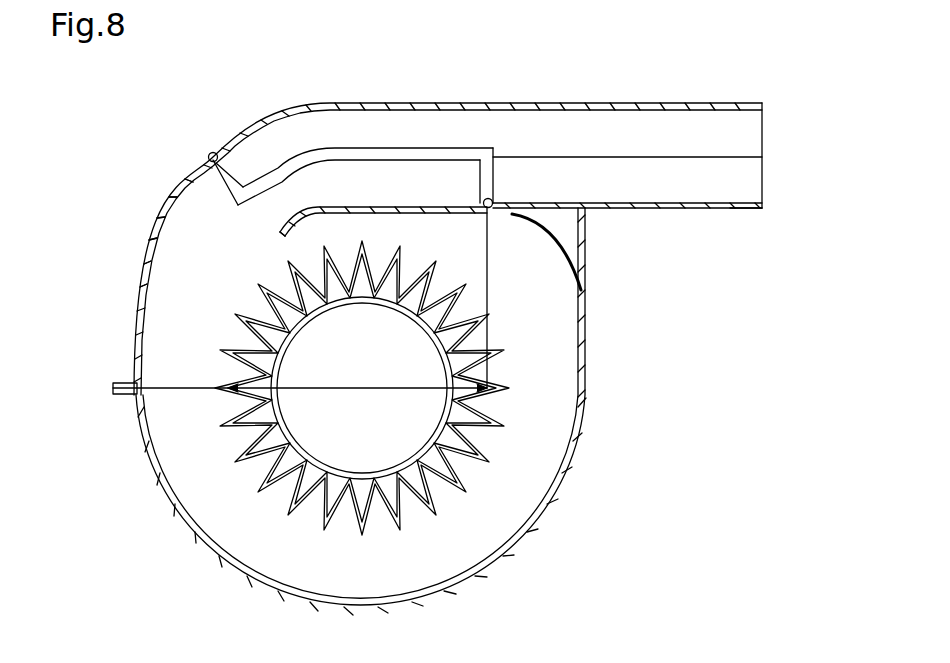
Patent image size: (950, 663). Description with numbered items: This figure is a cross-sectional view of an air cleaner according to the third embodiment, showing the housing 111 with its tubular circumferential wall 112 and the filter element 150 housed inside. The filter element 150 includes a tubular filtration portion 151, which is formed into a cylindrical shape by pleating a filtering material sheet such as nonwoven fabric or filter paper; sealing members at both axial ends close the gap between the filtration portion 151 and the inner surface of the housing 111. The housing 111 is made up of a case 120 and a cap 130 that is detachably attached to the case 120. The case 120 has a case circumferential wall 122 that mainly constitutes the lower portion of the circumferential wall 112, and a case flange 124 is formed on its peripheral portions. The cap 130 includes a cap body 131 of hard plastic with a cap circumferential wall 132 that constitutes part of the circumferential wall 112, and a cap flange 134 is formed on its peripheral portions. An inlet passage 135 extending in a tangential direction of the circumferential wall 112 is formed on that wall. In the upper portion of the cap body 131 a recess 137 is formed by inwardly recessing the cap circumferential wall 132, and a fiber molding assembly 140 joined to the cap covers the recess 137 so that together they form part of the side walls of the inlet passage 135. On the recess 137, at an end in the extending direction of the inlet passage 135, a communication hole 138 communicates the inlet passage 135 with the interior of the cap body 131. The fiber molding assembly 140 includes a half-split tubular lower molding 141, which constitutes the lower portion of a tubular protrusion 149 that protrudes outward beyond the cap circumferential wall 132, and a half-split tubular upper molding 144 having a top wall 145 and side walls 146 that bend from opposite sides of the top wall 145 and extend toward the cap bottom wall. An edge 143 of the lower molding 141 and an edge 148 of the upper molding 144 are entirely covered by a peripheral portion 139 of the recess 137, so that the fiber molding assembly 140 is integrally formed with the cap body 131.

The housing 111 is at (60, 215).
The circumferential wall 112 is at (583, 446).
The case 120 is at (142, 479).
The case circumferential wall 122 is at (250, 588).
The case flange 124 is at (115, 397).
The cap 130 is at (146, 233).
The cap body 131 is at (166, 203).
The cap circumferential wall 132 is at (143, 262).
The cap flange 134 is at (118, 381).
The inlet passage 135 is at (582, 143).
The recess 137 is at (420, 204).
The communication hole 138 is at (277, 234).
The peripheral portion 139 is at (209, 155).
The fiber molding assembly 140 is at (825, 283).
The lower molding 141 is at (729, 214).
The edge 143 is at (491, 202).
The upper molding 144 is at (763, 135).
The top wall 145 is at (500, 103).
The side walls 146 is at (380, 112).
The edge 148 is at (217, 166).
The protrusion 149 is at (663, 210).
The filter element 150 is at (434, 514).
The filtration portion 151 is at (490, 463).